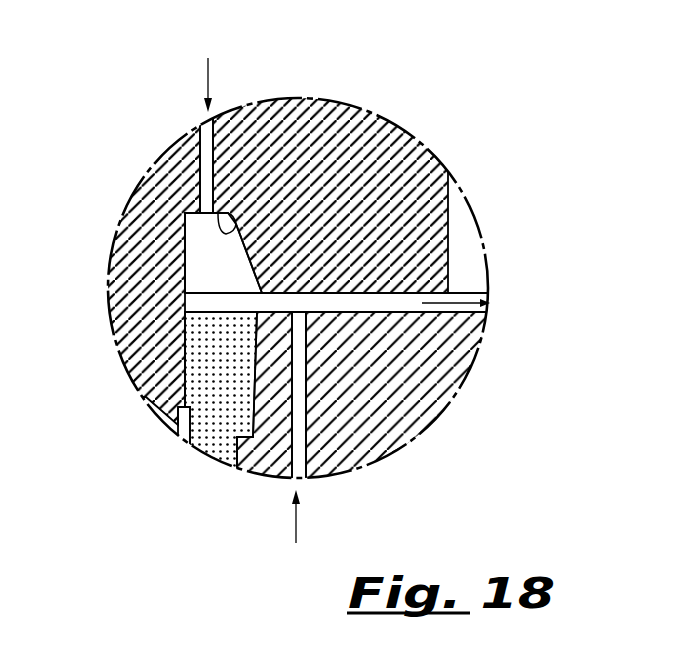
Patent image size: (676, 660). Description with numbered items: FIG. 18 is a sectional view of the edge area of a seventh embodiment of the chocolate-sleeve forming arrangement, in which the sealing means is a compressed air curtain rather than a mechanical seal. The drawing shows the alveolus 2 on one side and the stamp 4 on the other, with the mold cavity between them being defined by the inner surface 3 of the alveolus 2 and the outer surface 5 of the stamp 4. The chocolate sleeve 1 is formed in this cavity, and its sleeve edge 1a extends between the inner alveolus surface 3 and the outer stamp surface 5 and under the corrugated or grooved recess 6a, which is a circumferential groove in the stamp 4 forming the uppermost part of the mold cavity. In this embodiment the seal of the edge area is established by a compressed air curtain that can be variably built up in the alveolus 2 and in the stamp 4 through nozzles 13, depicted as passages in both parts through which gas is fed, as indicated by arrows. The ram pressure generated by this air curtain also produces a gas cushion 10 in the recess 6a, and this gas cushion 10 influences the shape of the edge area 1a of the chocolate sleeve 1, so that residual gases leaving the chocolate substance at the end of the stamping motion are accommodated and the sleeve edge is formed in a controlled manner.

The chocolate sleeve 1 is at (195, 357).
The sleeve edge 1a is at (188, 297).
The alveolus 2 is at (413, 398).
The inner surface of the alveolus 3 is at (238, 458).
The stamp 4 is at (425, 230).
The outer surface of the stamp 5 is at (186, 442).
The corrugated or grooved recess 6a is at (240, 222).
The gas cushion 10 is at (205, 247).
The nozzles 13 is at (205, 152).